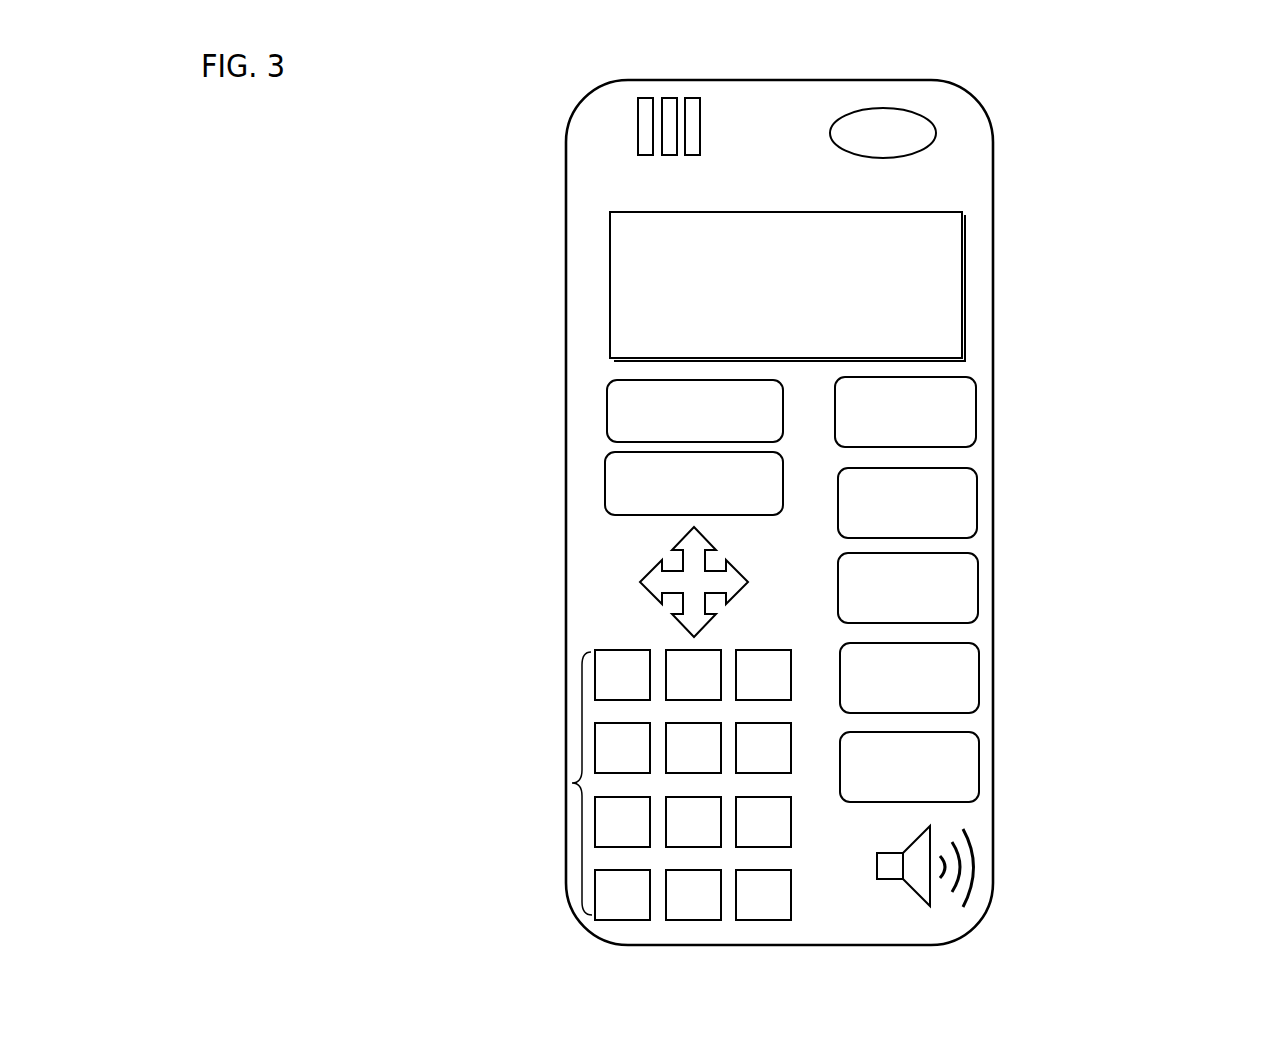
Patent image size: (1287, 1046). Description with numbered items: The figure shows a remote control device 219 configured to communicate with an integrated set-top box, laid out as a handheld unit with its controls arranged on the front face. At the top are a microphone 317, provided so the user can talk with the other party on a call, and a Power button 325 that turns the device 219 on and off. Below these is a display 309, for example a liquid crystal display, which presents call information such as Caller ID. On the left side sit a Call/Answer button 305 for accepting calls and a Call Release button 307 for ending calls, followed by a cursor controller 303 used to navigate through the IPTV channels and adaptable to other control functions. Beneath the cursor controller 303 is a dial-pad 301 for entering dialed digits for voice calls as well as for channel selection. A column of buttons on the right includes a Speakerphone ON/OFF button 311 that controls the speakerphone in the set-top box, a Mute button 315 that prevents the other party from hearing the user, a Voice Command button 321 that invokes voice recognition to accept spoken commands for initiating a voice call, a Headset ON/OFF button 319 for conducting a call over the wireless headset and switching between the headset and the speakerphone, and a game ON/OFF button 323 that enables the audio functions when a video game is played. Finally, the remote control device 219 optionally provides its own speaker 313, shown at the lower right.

The remote control device 219 is at (1155, 197).
The dial-pad 301 is at (572, 783).
The cursor controller 303 is at (655, 590).
The Call/Answer button 305 is at (607, 408).
The Call Release button 307 is at (605, 483).
The display 309 is at (610, 286).
The Speakerphone ON/OFF button 311 is at (976, 413).
The speaker 313 is at (877, 868).
The Mute button 315 is at (977, 505).
The microphone 317 is at (612, 137).
The Headset ON/OFF button 319 is at (979, 680).
The Voice Command button 321 is at (978, 589).
The game ON/OFF button 323 is at (979, 767).
The Power button 325 is at (936, 133).